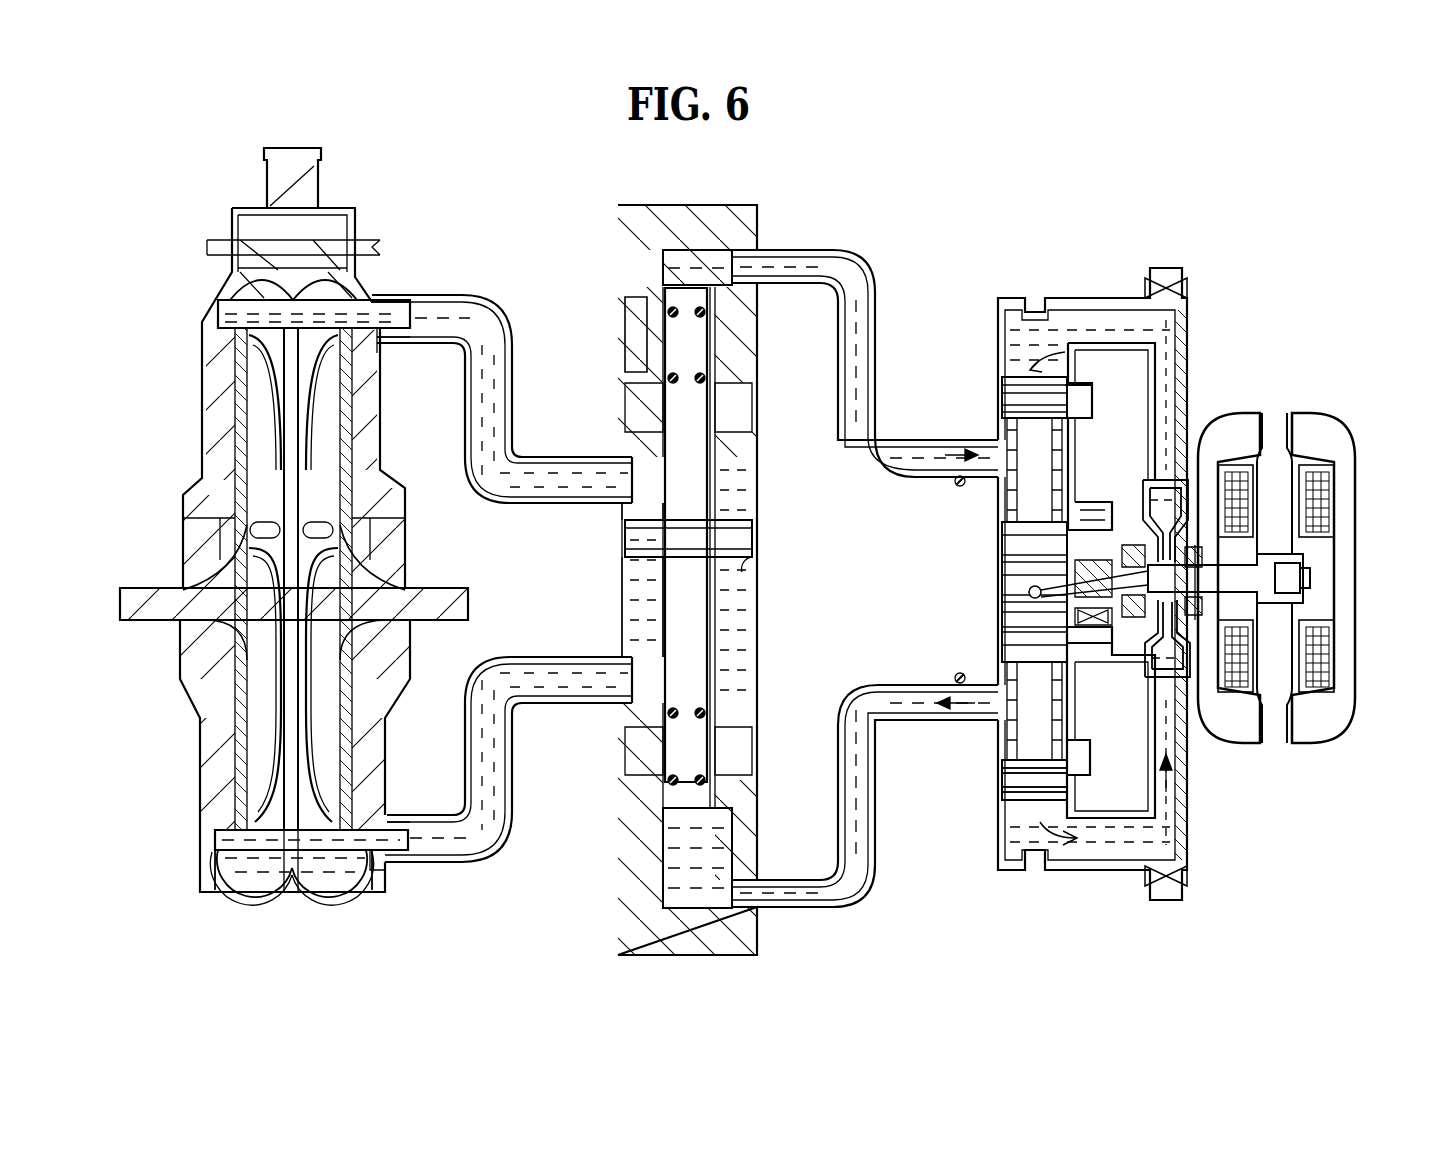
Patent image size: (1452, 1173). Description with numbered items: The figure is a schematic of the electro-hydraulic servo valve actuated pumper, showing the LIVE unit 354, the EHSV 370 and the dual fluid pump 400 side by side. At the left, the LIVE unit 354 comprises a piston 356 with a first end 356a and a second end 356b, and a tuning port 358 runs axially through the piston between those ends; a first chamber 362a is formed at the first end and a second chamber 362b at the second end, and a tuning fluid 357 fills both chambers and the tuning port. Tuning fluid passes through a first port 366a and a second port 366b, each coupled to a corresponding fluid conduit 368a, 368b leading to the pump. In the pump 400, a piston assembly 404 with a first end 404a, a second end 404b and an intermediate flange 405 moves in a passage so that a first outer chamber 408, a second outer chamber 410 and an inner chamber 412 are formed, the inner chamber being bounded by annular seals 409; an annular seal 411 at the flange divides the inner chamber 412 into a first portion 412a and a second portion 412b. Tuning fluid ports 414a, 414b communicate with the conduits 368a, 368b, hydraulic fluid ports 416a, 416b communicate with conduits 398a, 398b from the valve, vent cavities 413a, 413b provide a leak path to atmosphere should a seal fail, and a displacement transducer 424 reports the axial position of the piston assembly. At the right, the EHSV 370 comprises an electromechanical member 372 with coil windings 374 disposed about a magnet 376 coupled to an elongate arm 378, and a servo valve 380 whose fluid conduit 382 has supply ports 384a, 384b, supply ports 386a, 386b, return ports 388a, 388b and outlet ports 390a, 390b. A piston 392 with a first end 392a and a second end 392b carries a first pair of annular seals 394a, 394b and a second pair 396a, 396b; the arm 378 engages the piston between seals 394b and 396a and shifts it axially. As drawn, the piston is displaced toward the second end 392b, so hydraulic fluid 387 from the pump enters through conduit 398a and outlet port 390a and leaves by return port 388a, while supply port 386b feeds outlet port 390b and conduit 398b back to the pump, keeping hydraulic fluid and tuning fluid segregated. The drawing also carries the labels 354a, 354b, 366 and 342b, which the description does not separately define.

The LIVE unit 354 is at (183, 506).
The upper shaft end 354a is at (292, 148).
The lower shaft end 354b is at (292, 895).
The piston 356 is at (273, 500).
The first end 356a is at (222, 292).
The second end 356b is at (240, 832).
The tuning fluid 357 is at (505, 385).
The tuning port 358 is at (283, 684).
The first chamber 362a is at (258, 297).
The second chamber 362b is at (262, 878).
The pump housing 366 is at (205, 415).
The first port 366a is at (383, 300).
The second port 366b is at (400, 865).
The first fluid conduit 368a is at (408, 338).
The second fluid conduit 368b is at (400, 815).
The EHSV 370 is at (1350, 345).
The electromechanical member 372 is at (1340, 742).
The coil windings 374 is at (1318, 498).
The magnet 376 is at (1276, 420).
The elongate arm 378 is at (1029, 593).
The servo valve 380 is at (1225, 272).
The fluid conduit 382 is at (1057, 300).
The first supply port 384a is at (1163, 268).
The first supply port 384b is at (1163, 898).
The second supply port 386a is at (1095, 395).
The second supply port 386b is at (1090, 740).
The hydraulic fluid 387 is at (1178, 326).
The first return port 388a is at (1160, 440).
The second return port 388b is at (1163, 695).
The first outlet port 390a is at (958, 487).
The second outlet port 390b is at (958, 672).
The piston 392 is at (1028, 742).
The first end 392a is at (1015, 372).
The second end 392b is at (1034, 789).
The piston seal 342b is at (1005, 810).
The first annular seal 394a is at (1012, 405).
The first annular seal 394b is at (1040, 518).
The second annular seal 396a is at (1047, 668).
The second annular seal 396b is at (1010, 795).
The first conduit 398a is at (878, 306).
The second fluid conduit 398b is at (878, 850).
The dual fluid pump 400 is at (652, 204).
The piston assembly 404 is at (698, 362).
The first end 404a is at (672, 303).
The second end 404b is at (680, 800).
The flange 405 is at (742, 549).
The first outer chamber 408 is at (688, 257).
The annular seals 409 is at (700, 316).
The second outer chamber 410 is at (700, 902).
The annular seal 411 is at (752, 563).
The third chamber 412 is at (632, 592).
The first portion 412a is at (630, 526).
The second portion 412b is at (630, 640).
The vent cavity 413a is at (732, 418).
The vent cavity 413b is at (747, 740).
The first tuning fluid port 414a is at (578, 470).
The second tuning fluid port 414b is at (573, 690).
The first hydraulic fluid port 416a is at (800, 262).
The second hydraulic fluid port 416b is at (802, 906).
The displacement transducer 424 is at (632, 332).